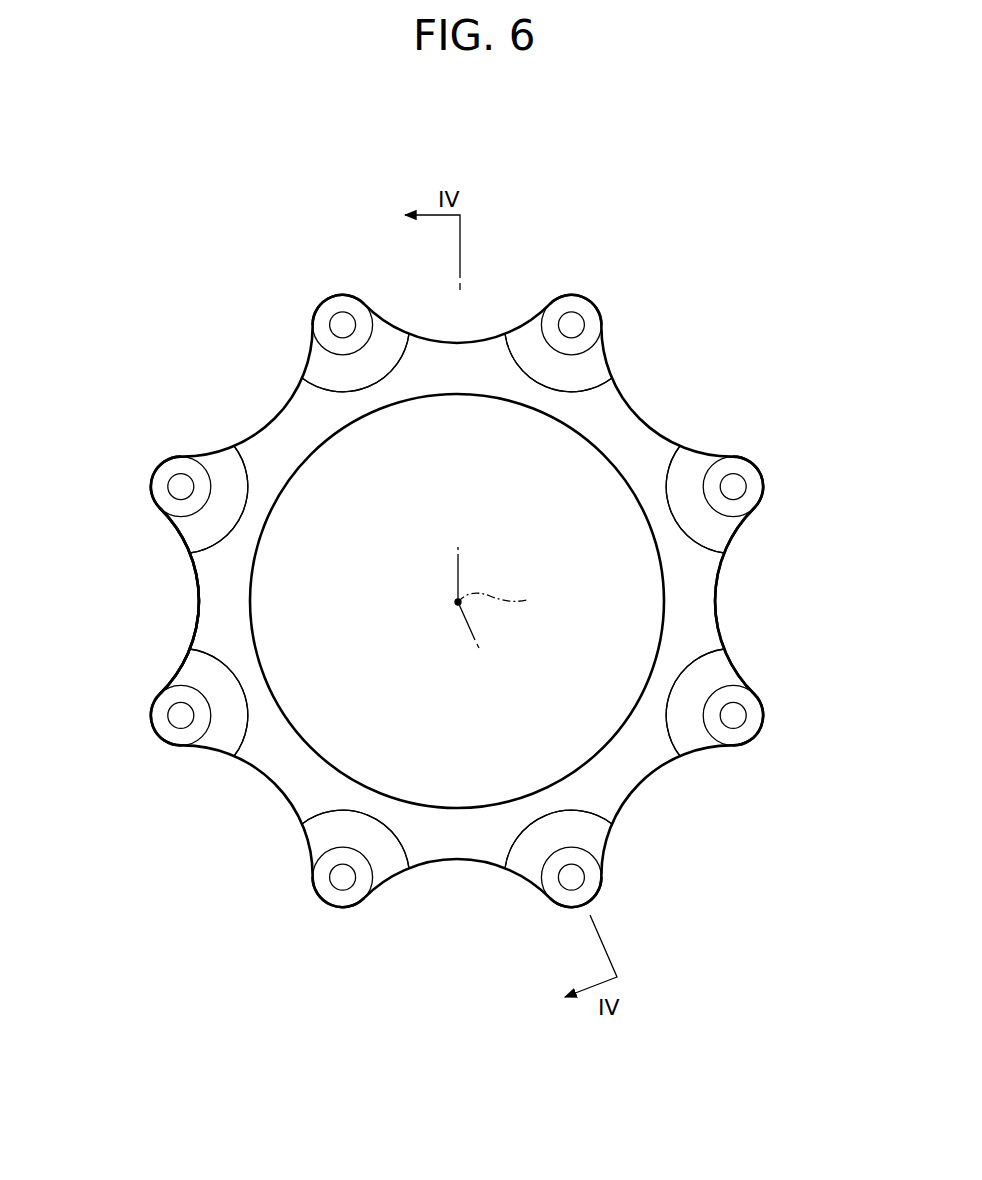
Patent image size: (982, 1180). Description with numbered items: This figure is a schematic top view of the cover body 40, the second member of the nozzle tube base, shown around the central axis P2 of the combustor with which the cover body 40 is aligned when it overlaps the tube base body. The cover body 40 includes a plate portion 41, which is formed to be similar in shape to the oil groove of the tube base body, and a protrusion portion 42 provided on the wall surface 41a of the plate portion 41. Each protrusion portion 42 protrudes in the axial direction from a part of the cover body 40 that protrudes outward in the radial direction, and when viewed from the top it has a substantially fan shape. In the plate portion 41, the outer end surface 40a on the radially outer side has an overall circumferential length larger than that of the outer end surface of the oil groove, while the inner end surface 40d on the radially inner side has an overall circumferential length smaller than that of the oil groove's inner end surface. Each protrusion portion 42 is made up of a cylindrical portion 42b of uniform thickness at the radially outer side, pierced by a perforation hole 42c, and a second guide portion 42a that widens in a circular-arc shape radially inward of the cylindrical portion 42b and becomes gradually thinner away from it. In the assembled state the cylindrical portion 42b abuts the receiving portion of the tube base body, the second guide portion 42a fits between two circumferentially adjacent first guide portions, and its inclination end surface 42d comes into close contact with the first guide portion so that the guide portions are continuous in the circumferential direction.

The cover body 40 is at (772, 210).
The outer end surface 40a is at (733, 623).
The inner end surface 40d is at (660, 625).
The plate portion 41 is at (197, 585).
The wall surface 41a is at (215, 623).
The protrusion portion 42 is at (337, 298).
The second guide portion 42a is at (388, 335).
The cylindrical portion 42b is at (328, 316).
The perforation hole 42c is at (345, 321).
The inclination end surface 42d is at (402, 330).
The central axis of the combustor P2 is at (519, 597).